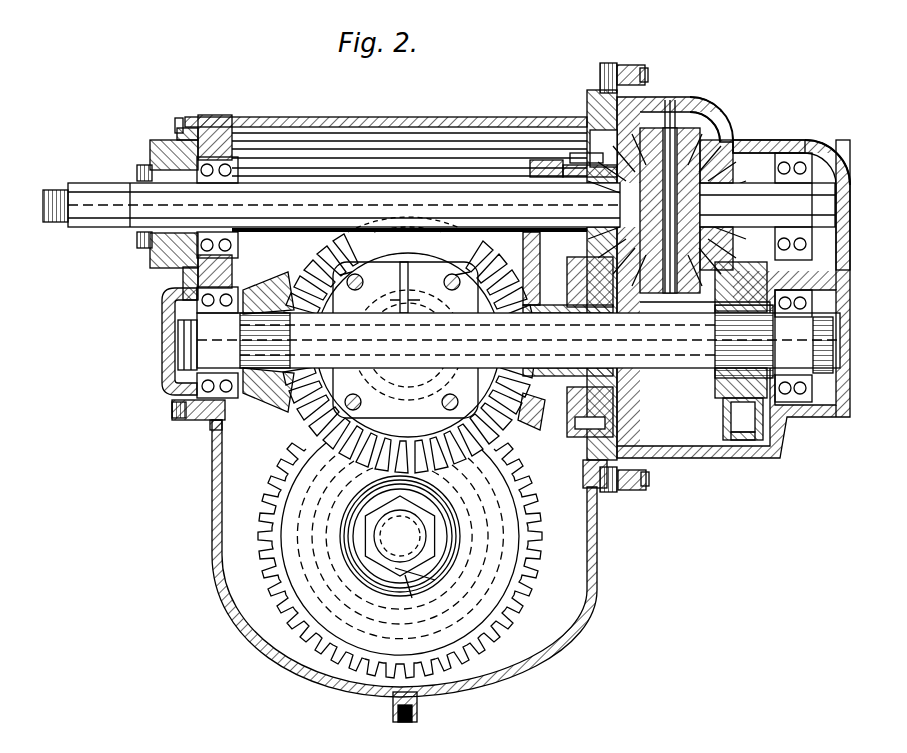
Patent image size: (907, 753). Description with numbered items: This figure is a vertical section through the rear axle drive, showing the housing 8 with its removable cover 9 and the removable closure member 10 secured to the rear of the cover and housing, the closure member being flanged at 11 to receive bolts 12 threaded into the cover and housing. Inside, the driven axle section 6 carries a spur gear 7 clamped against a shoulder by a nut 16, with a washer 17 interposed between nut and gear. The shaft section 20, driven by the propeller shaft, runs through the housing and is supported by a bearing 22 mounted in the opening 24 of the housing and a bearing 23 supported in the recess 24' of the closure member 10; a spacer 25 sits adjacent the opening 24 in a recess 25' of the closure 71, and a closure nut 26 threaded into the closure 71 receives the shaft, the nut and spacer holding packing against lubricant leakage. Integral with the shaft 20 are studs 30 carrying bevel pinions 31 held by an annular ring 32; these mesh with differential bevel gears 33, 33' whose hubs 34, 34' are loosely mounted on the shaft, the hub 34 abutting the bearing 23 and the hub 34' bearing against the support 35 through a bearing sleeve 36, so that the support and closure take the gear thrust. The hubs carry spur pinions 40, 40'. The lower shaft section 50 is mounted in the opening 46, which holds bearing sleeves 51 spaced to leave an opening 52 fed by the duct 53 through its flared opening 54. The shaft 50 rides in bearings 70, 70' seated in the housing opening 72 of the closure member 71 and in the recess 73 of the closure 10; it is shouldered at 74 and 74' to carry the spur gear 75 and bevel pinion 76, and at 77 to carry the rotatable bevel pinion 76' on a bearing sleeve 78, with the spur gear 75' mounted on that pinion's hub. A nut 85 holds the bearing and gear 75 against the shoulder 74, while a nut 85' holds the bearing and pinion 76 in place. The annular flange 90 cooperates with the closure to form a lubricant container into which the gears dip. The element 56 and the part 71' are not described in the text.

The driven axle section 6 is at (399, 536).
The spur gear 7 is at (543, 548).
The housing 8 is at (212, 548).
The removable cover 9 is at (405, 117).
The removable closure member 10 is at (850, 262).
The flange 11 is at (625, 490).
The bolt 12 is at (645, 478).
The nut 16 is at (414, 600).
The washer 17 is at (430, 575).
The shaft section 20 is at (145, 205).
The bearing 22 is at (237, 165).
The bearing 23 is at (815, 145).
The opening 24 is at (242, 190).
The recess 24' is at (862, 203).
The spacer 25 is at (146, 143).
The recess 25' is at (167, 109).
The closure nut 26 is at (140, 168).
The stud 30 is at (657, 135).
The bevel pinion 31 is at (730, 140).
The annular ring 32 is at (700, 110).
The differential bevel gear 33 is at (769, 135).
The differential bevel gear 33' is at (580, 273).
The hub 34 is at (793, 189).
The hub 34' is at (590, 183).
The support 35 is at (498, 207).
The bearing sleeve 36 is at (530, 168).
The pinion 40 is at (767, 205).
The pinion 40' is at (566, 148).
The opening 46 is at (465, 330).
The shaft section 50 is at (518, 341).
The bearing sleeve 51 is at (460, 285).
The opening 52 is at (412, 318).
The duct 53 is at (420, 300).
The flared opening 54 is at (404, 270).
The rim 56 is at (445, 435).
The bearing 70 is at (824, 329).
The bearing 70' is at (164, 398).
The closure member 71 is at (159, 314).
The bolt 71' is at (171, 408).
The opening 72 is at (225, 287).
The recess 73 is at (845, 300).
The shoulder 74 is at (718, 351).
The shoulder 74' is at (268, 401).
The spur gear 75 is at (751, 456).
The spur gear 75' is at (575, 477).
The bevel pinion 76 is at (268, 275).
The bevel pinion 76' is at (536, 429).
The shoulder 77 is at (630, 372).
The bearing sleeve 78 is at (560, 310).
The nut 85 is at (851, 345).
The nut 85' is at (151, 345).
The annular flange 90 is at (605, 420).